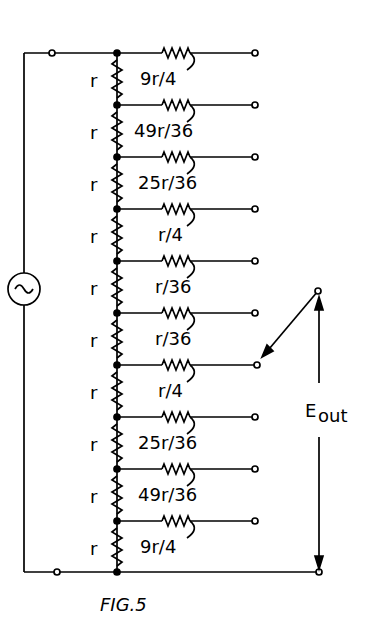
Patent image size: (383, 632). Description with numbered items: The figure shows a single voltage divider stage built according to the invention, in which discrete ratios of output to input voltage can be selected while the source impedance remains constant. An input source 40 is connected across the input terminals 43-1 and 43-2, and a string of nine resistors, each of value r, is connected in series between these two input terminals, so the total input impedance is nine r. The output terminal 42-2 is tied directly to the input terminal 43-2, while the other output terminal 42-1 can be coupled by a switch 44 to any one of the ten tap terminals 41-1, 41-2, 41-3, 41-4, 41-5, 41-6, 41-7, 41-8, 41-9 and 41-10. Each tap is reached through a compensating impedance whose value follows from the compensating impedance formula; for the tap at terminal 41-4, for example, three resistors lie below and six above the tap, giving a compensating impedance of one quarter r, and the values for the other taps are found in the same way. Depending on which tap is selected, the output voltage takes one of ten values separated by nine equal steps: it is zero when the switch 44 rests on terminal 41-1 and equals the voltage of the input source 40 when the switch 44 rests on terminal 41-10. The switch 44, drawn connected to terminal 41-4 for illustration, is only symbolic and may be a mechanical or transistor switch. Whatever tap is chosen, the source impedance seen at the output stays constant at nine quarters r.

The input source 40 is at (36, 298).
The terminal 41-1 is at (253, 524).
The terminal 41-2 is at (253, 472).
The terminal 41-3 is at (253, 420).
The terminal 41-4 is at (257, 368).
The terminal 41-5 is at (257, 310).
The terminal 41-6 is at (263, 254).
The terminal 41-7 is at (263, 205).
The terminal 41-8 is at (263, 153).
The terminal 41-9 is at (263, 101).
The terminal 41-10 is at (263, 41).
The output terminal 42-1 is at (320, 288).
The output terminal 42-2 is at (316, 575).
The input terminal 43-1 is at (60, 41).
The input terminal 43-2 is at (59, 569).
The switch 44 is at (290, 330).